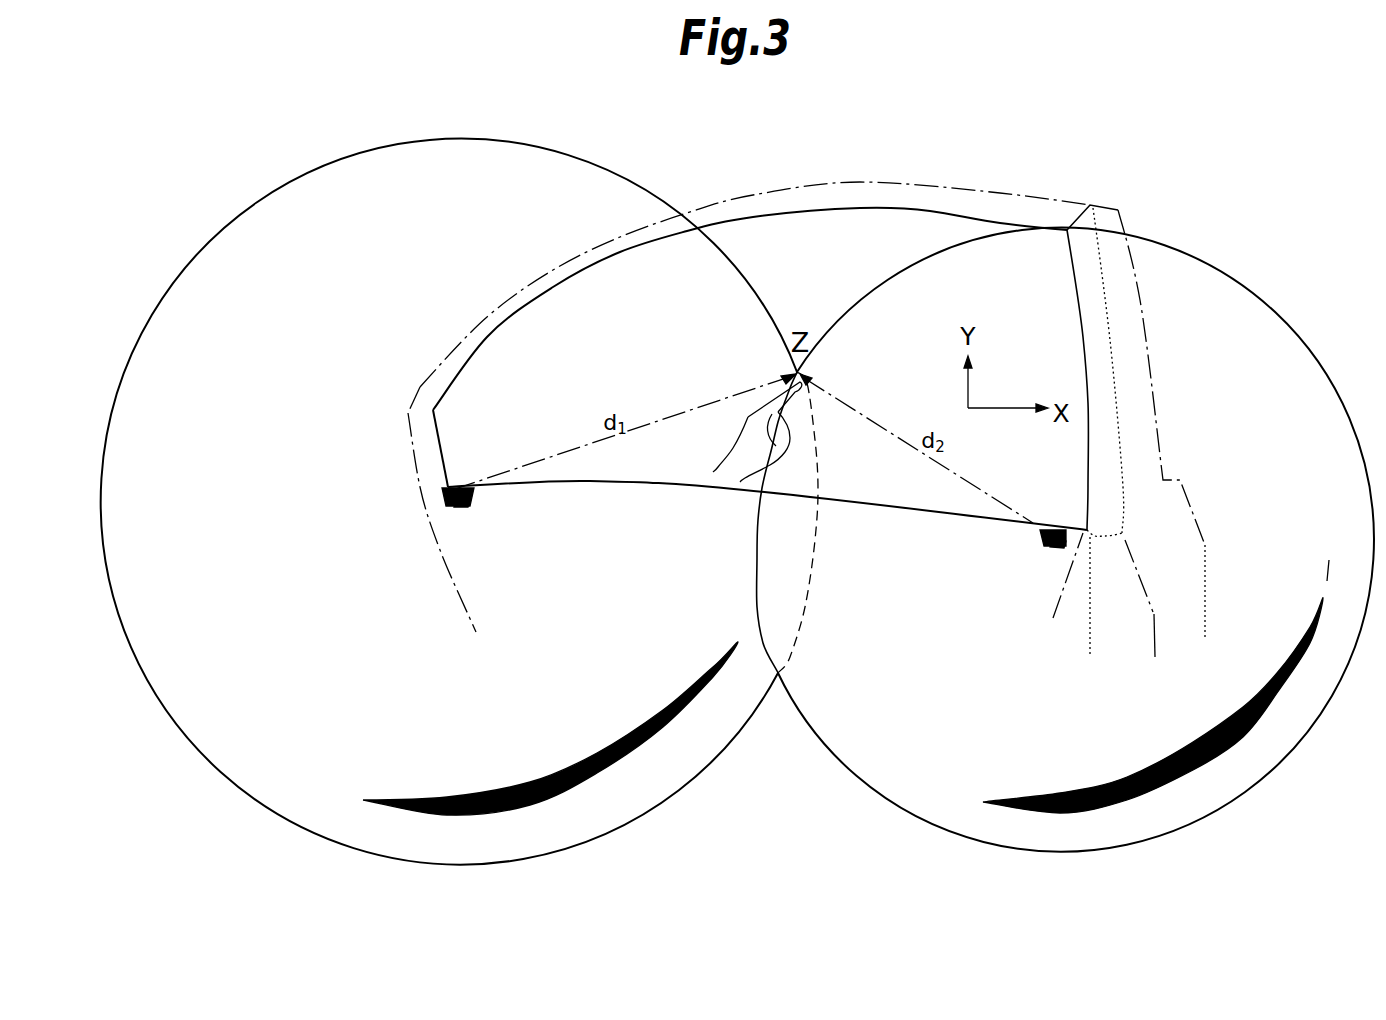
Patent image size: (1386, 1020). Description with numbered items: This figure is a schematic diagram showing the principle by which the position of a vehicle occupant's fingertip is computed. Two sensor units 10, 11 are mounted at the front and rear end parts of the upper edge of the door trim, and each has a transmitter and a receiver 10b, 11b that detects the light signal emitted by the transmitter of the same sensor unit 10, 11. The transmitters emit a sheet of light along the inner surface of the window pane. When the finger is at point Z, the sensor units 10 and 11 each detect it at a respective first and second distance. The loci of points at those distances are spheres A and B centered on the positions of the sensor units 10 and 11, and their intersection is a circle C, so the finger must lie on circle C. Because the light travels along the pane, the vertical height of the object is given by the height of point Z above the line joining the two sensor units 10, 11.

The sensor unit 10 is at (430, 506).
The receiver 10b is at (455, 503).
The sensor unit 11 is at (1042, 543).
The receiver 11b is at (1060, 550).
The sphere A is at (560, 148).
The sphere B is at (1025, 853).
The circle C is at (762, 643).